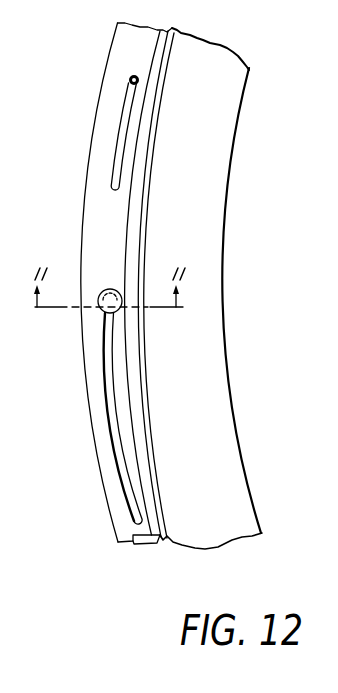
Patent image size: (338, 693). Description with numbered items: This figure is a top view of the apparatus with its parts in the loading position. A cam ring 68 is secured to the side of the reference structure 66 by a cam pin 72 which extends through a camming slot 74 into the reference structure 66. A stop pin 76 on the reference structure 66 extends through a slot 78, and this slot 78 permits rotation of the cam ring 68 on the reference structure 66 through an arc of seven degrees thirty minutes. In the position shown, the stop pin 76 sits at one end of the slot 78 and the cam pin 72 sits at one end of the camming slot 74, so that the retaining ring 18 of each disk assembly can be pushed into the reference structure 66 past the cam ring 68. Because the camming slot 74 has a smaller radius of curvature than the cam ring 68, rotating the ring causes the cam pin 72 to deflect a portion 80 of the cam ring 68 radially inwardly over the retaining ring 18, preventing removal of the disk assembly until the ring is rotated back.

The retaining ring 18 is at (194, 196).
The reference structure 66 is at (146, 545).
The cam ring 68 is at (84, 230).
The cam pin 72 is at (103, 313).
The camming slot 74 is at (119, 471).
The stop pin 76 is at (128, 80).
The slot 78 is at (121, 129).
The portion of cam ring 80 is at (124, 404).